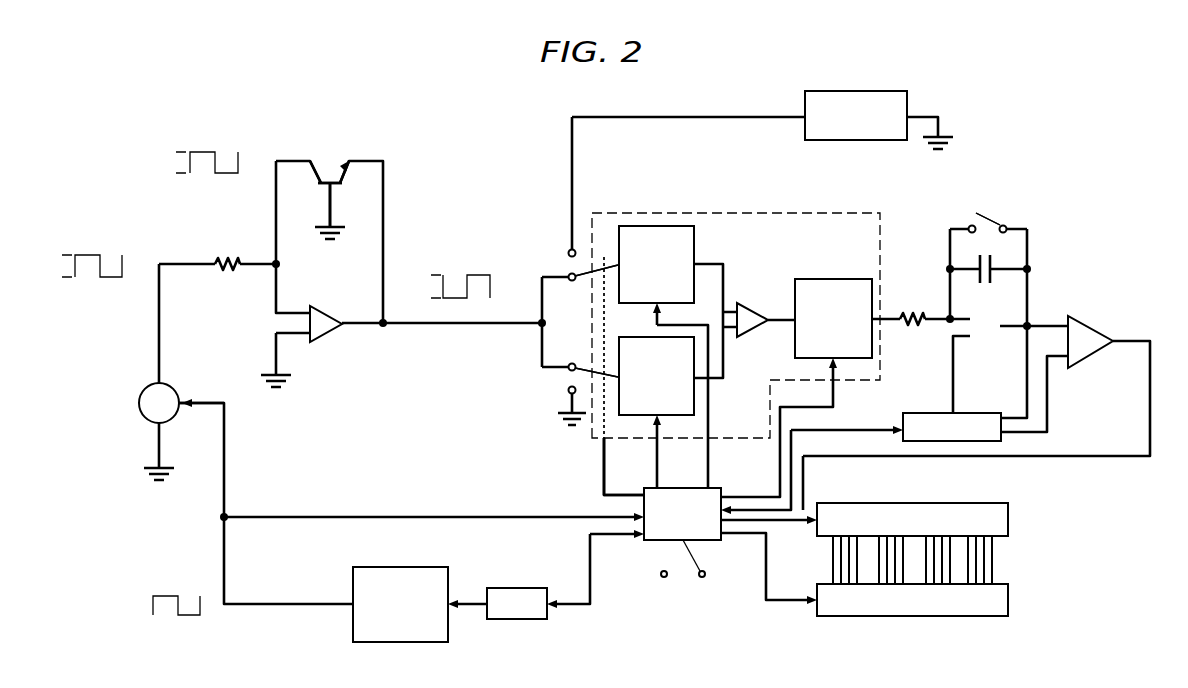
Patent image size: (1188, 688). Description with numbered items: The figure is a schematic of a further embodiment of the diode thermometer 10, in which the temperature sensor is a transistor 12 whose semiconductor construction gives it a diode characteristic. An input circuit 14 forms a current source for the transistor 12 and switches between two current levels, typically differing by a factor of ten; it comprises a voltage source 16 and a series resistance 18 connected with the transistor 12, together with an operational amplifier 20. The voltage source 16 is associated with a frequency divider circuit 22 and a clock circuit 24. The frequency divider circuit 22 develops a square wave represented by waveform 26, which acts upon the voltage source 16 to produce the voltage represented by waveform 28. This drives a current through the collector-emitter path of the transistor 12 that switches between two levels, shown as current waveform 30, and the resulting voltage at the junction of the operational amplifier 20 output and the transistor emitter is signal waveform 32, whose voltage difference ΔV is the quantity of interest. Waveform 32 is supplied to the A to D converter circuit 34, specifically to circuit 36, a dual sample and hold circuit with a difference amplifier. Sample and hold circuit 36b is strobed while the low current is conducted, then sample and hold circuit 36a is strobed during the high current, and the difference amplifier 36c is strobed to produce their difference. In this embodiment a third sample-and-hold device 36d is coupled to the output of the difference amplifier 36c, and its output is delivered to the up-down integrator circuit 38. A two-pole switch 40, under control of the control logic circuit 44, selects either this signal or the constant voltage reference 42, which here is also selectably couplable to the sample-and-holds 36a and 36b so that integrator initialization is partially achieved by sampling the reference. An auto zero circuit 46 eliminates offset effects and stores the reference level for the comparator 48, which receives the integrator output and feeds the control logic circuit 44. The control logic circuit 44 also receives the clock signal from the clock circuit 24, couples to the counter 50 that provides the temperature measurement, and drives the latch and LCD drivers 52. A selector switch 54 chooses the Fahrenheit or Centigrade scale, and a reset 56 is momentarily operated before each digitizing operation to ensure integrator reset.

The diode thermometer 10 is at (452, 206).
The transistor 12 is at (331, 180).
The input circuit 14 is at (244, 413).
The voltage source 16 is at (174, 386).
The series resistance 18 is at (230, 262).
The operational amplifier 20 is at (324, 340).
The frequency divider circuit 22 is at (388, 567).
The clock circuit 24 is at (524, 588).
The waveform 26 is at (194, 618).
The waveform 28 is at (112, 282).
The current waveform 30 is at (199, 152).
The signal waveform 32 is at (481, 275).
The A to D converter circuit 34 is at (574, 434).
The dual sample and hold circuit with difference amplifier 36 is at (611, 213).
The sample and hold circuit 36a is at (652, 226).
The sample and hold circuit 36b is at (652, 337).
The difference amplifier 36c is at (762, 308).
The third sample-and-hold device 36d is at (831, 279).
The up-down integrator circuit 38 is at (940, 334).
The two-pole switch 40 is at (603, 460).
The voltage reference 42 is at (855, 91).
The control logic circuit 44 is at (719, 488).
The auto zero circuit 46 is at (925, 412).
The comparator 48 is at (1088, 320).
The counter 50 is at (1002, 503).
The latch and LCD drivers 52 is at (1003, 584).
The selector switch 54 is at (683, 578).
The reset 56 is at (991, 222).